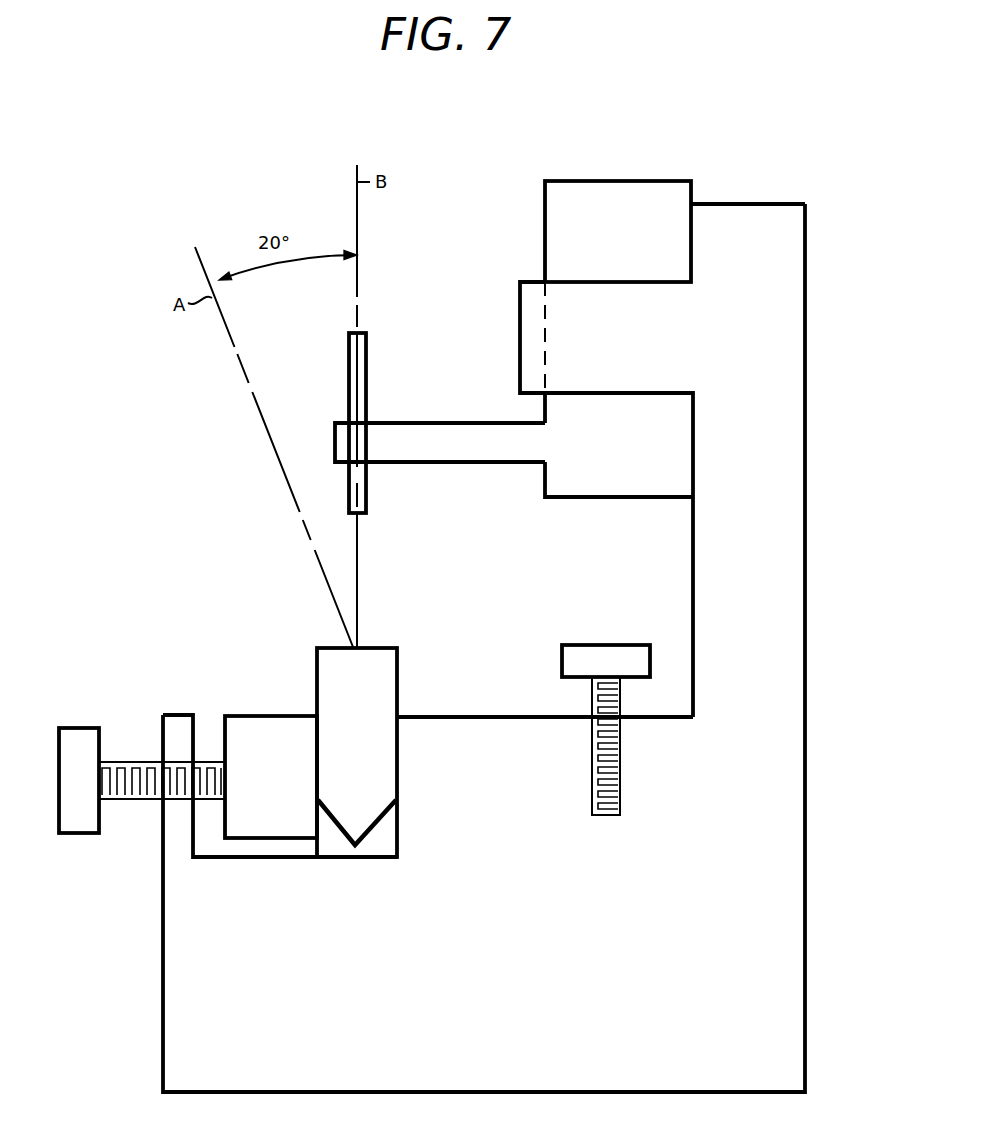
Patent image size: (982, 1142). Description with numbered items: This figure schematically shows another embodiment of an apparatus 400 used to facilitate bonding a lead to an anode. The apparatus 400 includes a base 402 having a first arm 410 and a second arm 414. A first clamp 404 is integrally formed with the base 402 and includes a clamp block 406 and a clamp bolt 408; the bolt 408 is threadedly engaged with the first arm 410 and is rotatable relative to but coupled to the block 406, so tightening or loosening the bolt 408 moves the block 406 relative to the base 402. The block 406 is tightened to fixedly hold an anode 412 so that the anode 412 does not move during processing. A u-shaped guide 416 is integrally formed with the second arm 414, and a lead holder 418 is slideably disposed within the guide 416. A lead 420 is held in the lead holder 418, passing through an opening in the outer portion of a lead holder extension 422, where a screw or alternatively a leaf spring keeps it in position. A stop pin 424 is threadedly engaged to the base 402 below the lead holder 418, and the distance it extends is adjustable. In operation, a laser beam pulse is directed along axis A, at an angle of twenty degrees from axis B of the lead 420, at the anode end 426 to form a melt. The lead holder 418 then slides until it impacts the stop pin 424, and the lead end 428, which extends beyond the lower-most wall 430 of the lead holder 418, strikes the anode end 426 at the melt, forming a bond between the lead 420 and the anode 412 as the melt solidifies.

The apparatus 400 is at (829, 127).
The base 402 is at (805, 978).
The first clamp 404 is at (200, 620).
The clamp block 406 is at (267, 715).
The clamp bolt 408 is at (90, 835).
The first arm 410 is at (162, 740).
The anode 412 is at (398, 673).
The second arm 414 is at (806, 229).
The guide 416 is at (623, 395).
The lead holder 418 is at (648, 180).
The lead 420 is at (367, 370).
The lead holder extension 422 is at (425, 465).
The stop pin 424 is at (595, 643).
The anode end 426 is at (372, 647).
The lead end 428 is at (362, 517).
The lower-most wall 430 is at (585, 498).